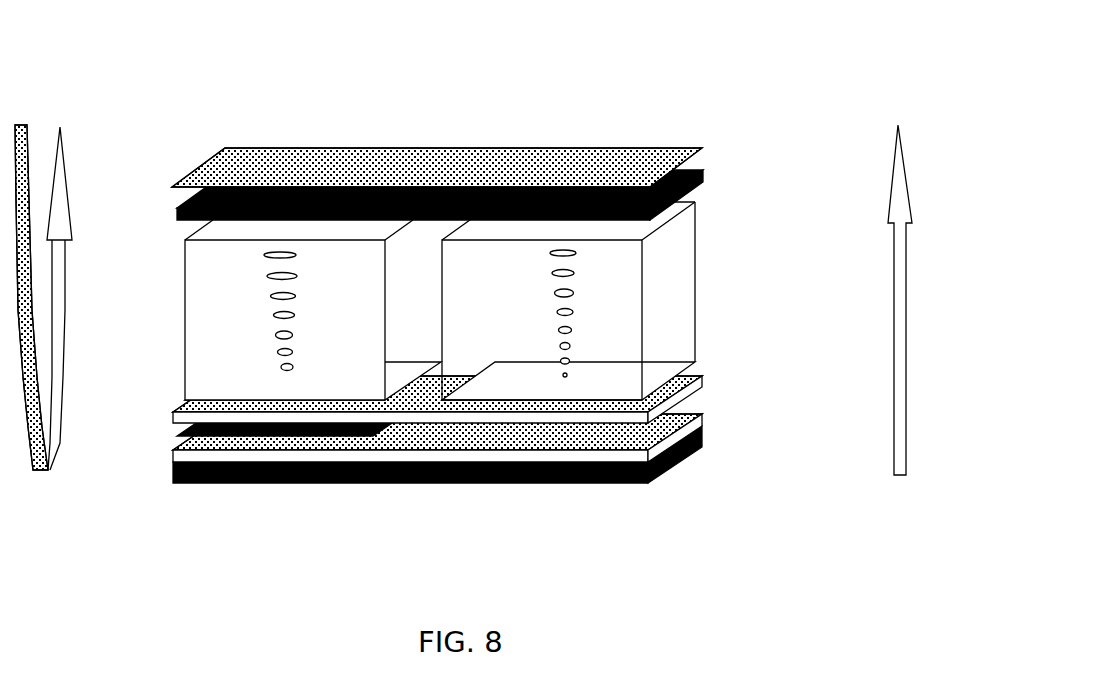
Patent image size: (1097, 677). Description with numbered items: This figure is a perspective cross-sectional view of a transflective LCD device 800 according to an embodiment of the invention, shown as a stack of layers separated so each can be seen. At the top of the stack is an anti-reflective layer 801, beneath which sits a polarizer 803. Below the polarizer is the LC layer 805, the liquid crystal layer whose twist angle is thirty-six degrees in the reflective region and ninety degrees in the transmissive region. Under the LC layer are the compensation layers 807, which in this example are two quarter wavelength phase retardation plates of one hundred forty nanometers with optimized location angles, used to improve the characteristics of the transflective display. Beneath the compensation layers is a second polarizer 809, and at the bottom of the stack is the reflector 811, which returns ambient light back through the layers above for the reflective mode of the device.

The device 800 is at (446, 247).
The anti-reflective layer 801 is at (687, 163).
The polarizer 803 is at (687, 198).
The LC layer 805 is at (680, 300).
The compensation layers 807 is at (655, 420).
The polarizer 809 is at (703, 447).
The reflector 811 is at (177, 436).